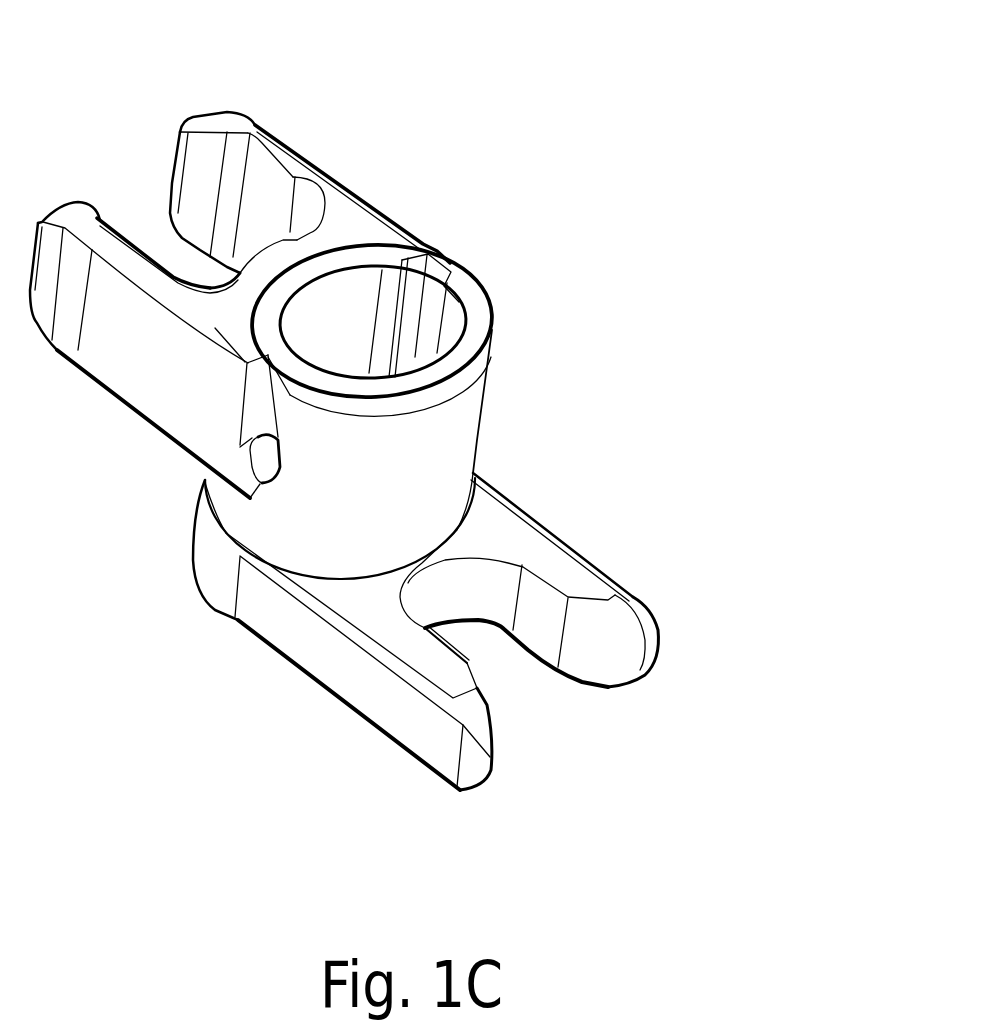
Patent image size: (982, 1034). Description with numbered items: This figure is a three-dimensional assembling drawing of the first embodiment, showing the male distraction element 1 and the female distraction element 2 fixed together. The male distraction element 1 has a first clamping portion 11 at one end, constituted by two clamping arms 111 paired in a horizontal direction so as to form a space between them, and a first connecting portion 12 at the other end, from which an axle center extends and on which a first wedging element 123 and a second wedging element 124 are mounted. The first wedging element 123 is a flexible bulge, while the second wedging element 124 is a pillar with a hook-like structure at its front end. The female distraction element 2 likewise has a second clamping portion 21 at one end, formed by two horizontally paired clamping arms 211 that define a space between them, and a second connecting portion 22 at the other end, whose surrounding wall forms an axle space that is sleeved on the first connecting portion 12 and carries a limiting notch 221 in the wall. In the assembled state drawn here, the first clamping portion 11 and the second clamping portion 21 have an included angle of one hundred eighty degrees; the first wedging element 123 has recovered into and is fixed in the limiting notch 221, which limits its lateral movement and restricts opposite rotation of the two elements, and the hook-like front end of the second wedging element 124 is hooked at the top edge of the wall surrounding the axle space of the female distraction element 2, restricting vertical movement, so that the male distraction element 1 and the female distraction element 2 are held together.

The male distraction element 1 is at (303, 677).
The first clamping portion 11 is at (500, 656).
The clamping arms 111 is at (620, 648).
The first connecting portion 12 is at (452, 328).
The second wedging element 124 is at (440, 260).
The first wedging element 123 is at (267, 457).
The female distraction element 2 is at (380, 206).
The second clamping portion 21 is at (137, 213).
The clamping arms 211 is at (197, 177).
The second connecting portion 22 is at (457, 422).
The limiting notch 221 is at (262, 401).